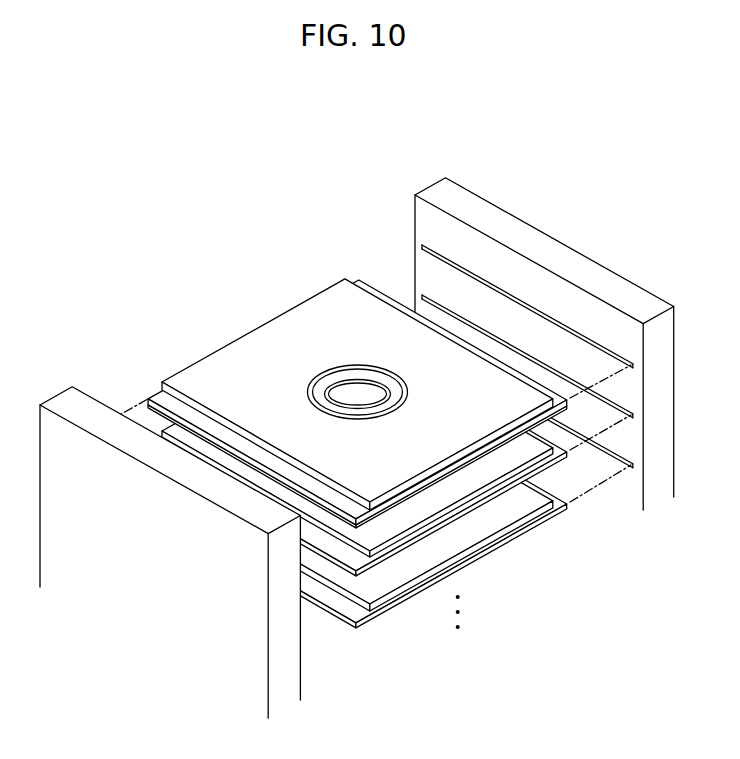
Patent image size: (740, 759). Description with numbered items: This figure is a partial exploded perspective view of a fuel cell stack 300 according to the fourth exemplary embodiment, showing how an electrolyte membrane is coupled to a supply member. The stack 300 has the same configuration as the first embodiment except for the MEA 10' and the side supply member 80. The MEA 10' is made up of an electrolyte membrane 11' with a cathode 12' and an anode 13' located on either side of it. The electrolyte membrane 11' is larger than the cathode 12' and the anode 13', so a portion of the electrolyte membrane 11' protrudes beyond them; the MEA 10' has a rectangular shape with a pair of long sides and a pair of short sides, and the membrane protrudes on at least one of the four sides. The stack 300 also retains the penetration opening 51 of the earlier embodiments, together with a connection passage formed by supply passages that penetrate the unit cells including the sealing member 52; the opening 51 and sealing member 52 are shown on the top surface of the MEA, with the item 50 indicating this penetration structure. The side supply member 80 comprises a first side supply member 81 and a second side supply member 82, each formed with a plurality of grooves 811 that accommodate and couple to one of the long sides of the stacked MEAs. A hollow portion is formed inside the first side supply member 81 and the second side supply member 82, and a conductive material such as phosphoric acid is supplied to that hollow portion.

The fuel cell stack 300 is at (347, 124).
The MEA 10' is at (340, 461).
The electrolyte membrane 11' is at (340, 402).
The cathode 12' is at (357, 394).
The anode 13' is at (357, 489).
The ring member 50 is at (419, 428).
The penetration opening 51 is at (362, 403).
The sealing member 52 is at (403, 407).
The side supply member 80 is at (500, 316).
The first side supply member 81 is at (621, 286).
The grooves 811 is at (421, 252).
The second side supply member 82 is at (63, 401).